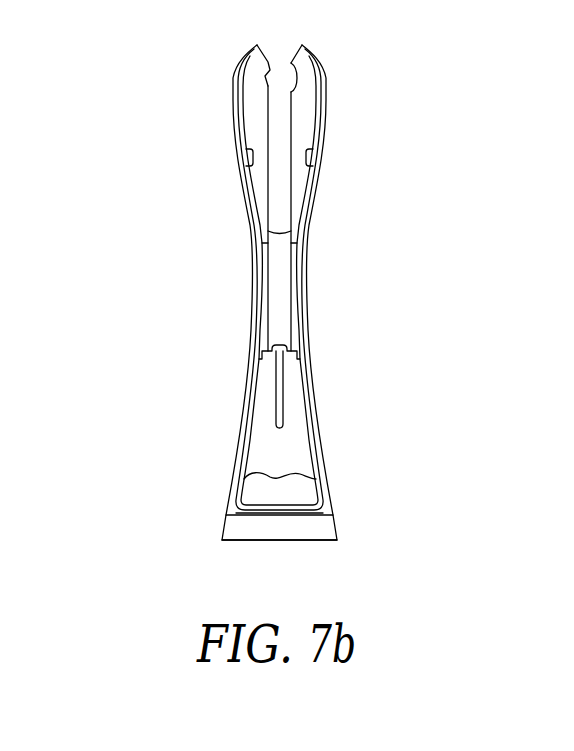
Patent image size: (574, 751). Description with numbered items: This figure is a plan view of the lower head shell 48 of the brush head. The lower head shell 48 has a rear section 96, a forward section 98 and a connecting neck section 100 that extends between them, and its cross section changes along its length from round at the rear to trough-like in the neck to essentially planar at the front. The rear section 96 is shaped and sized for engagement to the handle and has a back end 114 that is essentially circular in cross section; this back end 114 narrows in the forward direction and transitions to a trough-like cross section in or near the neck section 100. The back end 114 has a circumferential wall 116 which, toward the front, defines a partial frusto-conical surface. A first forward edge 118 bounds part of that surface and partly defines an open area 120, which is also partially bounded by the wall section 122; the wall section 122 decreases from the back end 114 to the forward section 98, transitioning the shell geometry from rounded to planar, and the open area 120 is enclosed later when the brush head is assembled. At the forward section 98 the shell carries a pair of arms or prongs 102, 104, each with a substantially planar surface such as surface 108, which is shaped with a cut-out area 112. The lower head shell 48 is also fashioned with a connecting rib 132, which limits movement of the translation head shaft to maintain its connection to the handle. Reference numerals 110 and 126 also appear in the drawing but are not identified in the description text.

The lower head shell 48 is at (206, 410).
The rear section 96 is at (313, 388).
The forward section 98 is at (312, 218).
The connecting neck section 100 is at (305, 322).
The arm or prong 102 is at (264, 50).
The arm or prong 104 is at (317, 66).
The planar surface 108 is at (303, 112).
The first prong 110 is at (263, 82).
The cut-out area 112 is at (303, 85).
The back end 114 is at (337, 529).
The circumferential wall 116 is at (258, 531).
The first forward edge 118 is at (282, 508).
The open area 120 is at (260, 447).
The wall section 122 is at (321, 442).
The tabs 126 is at (253, 108).
The connecting rib 132 is at (273, 394).